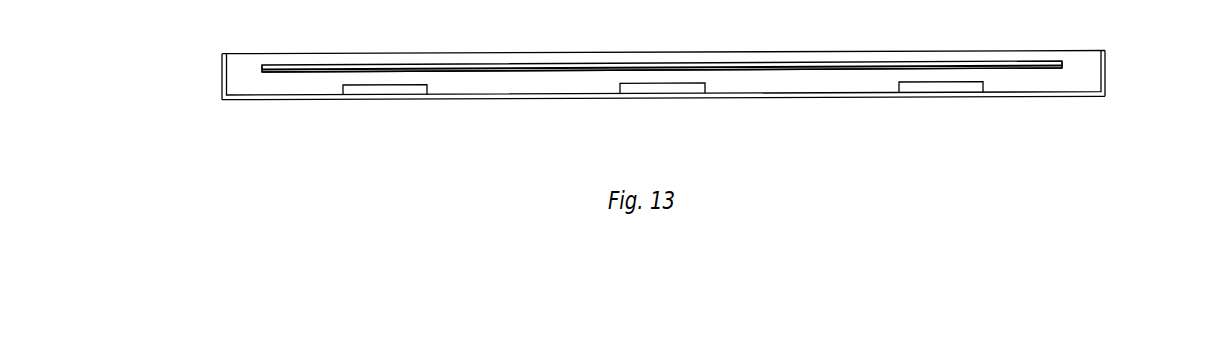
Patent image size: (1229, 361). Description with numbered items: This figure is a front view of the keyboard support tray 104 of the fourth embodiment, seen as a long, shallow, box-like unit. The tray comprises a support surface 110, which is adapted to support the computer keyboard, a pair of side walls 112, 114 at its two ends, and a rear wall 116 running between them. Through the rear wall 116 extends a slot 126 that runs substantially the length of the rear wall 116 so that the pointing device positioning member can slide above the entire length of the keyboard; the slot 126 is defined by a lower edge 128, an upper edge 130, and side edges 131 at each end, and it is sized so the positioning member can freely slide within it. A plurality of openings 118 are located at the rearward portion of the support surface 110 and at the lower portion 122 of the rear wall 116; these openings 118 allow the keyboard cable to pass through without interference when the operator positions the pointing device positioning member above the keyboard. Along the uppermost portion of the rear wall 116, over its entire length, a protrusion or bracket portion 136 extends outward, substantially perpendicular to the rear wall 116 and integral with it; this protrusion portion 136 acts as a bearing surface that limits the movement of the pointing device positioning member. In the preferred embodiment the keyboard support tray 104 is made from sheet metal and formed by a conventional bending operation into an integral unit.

The keyboard support tray 104 is at (186, 0).
The support surface 110 is at (517, 93).
The side wall 112 is at (222, 81).
The side wall 114 is at (1107, 83).
The rear wall 116 is at (243, 62).
The openings 118 is at (383, 89).
The lower portion 122 is at (305, 83).
The slot 126 is at (464, 60).
The lower edge 128 is at (332, 72).
The upper edge 130 is at (383, 63).
The side edges 131 is at (262, 67).
The protrusion portion 136 is at (580, 52).